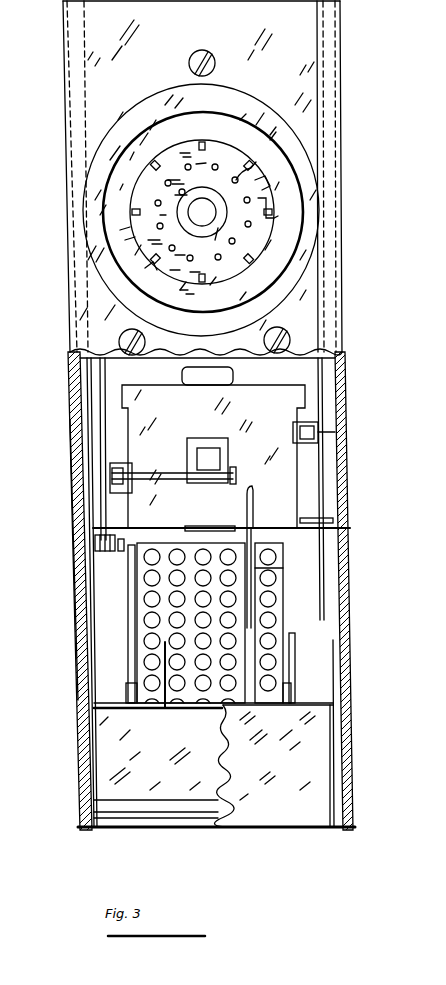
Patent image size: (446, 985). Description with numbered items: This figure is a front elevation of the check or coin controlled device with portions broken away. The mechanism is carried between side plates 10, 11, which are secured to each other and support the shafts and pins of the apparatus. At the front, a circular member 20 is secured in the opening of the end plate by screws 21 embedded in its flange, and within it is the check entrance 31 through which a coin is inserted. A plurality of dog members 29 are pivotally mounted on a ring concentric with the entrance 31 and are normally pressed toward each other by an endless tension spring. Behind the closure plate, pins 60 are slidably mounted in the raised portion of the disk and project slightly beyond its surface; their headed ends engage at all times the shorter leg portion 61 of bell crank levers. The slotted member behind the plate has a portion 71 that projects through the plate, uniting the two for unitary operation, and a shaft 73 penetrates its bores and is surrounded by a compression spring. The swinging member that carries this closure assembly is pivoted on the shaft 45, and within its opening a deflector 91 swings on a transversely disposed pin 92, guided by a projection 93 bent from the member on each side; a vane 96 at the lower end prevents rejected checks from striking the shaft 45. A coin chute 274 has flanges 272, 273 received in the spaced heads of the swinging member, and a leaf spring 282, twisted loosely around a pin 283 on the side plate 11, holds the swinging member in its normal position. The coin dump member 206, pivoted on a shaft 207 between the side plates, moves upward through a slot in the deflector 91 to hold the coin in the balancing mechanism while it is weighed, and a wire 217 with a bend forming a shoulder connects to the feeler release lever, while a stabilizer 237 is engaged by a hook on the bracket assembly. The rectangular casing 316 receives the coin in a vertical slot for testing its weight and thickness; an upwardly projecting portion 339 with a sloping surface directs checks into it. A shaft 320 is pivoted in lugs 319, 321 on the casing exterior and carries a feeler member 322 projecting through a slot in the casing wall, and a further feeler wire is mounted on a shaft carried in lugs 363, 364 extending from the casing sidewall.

The side plate 10 is at (343, 582).
The side plate 11 is at (74, 601).
The circular member 20 is at (268, 82).
The screws 21 is at (228, 46).
The dog members 29 is at (263, 203).
The check entrance 31 is at (258, 228).
The shaft 45 is at (155, 810).
The pins 60 is at (244, 172).
The shorter leg portion 61 is at (160, 206).
The portion 71 is at (216, 236).
The shaft 73 is at (218, 212).
The deflector 91 is at (137, 585).
The pin 92 is at (96, 700).
The projection 93 is at (131, 681).
The vane 96 is at (294, 815).
The coin dump member 206 is at (251, 590).
The shaft 207 is at (310, 518).
The wire 217 is at (276, 556).
The stabilizer 237 is at (233, 528).
The flange 272 is at (127, 698).
The flange 273 is at (299, 695).
The coin chute 274 is at (128, 625).
The leaf spring 282 is at (103, 400).
The pin 283 is at (124, 552).
The rectangular casing 316 is at (272, 395).
The lug 319 is at (112, 467).
The shaft 320 is at (176, 481).
The lug 321 is at (227, 466).
The feeler member 322 is at (208, 448).
The upwardly projecting portion 339 is at (230, 377).
The lug 363 is at (297, 436).
The lug 364 is at (320, 430).